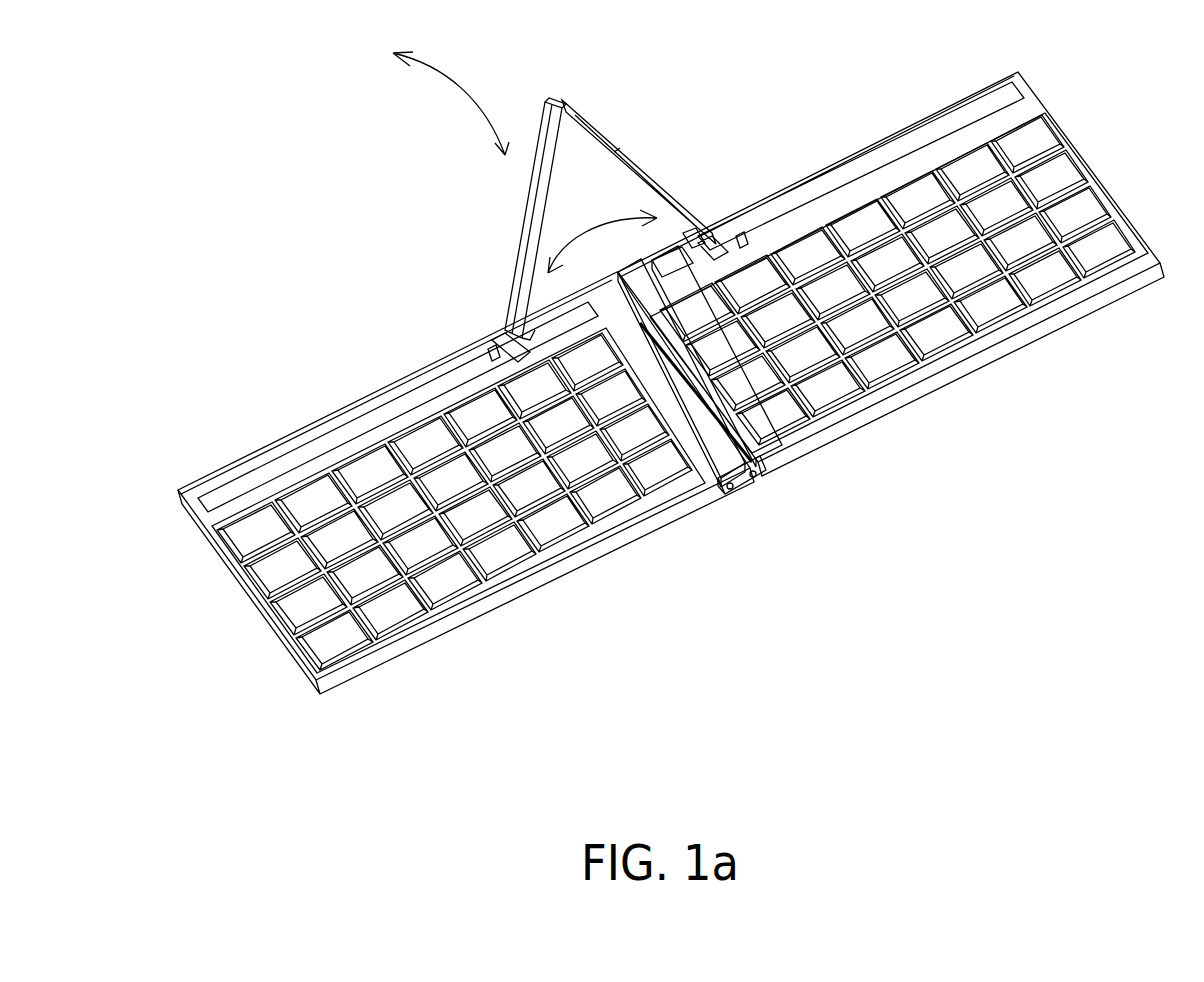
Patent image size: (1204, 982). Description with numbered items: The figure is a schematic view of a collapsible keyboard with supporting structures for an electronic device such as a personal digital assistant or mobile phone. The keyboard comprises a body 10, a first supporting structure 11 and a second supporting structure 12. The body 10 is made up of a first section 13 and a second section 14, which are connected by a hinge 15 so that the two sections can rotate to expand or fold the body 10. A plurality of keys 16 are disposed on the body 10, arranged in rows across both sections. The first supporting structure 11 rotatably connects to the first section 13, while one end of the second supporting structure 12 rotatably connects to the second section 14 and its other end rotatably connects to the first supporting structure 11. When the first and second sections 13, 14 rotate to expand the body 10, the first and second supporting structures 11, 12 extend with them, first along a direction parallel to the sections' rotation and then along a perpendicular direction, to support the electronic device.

The body 10 is at (671, 398).
The first supporting structure 11 is at (527, 213).
The second supporting structure 12 is at (633, 170).
The first section 13 is at (617, 540).
The second section 14 is at (842, 430).
The hinge 15 is at (745, 487).
The keys 16 is at (415, 547).